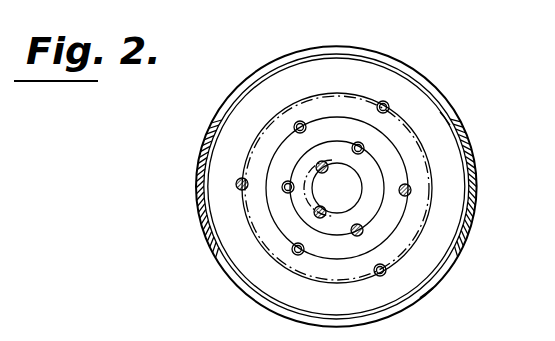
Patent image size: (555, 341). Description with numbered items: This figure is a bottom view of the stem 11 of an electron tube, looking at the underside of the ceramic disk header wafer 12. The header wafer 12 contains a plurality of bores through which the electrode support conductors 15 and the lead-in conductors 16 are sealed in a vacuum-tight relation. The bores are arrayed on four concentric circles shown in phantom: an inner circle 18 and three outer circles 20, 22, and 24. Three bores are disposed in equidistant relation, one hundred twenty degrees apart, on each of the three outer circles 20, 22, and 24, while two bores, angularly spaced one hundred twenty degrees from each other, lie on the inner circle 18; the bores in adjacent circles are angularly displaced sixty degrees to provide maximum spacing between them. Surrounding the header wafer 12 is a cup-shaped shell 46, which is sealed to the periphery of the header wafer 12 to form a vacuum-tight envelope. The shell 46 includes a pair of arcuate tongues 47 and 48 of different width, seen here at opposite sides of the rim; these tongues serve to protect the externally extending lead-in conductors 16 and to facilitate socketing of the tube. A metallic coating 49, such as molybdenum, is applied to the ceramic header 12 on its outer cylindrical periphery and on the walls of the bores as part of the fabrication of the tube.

The stem 11 is at (405, 75).
The ceramic disk header wafer 12 is at (297, 79).
The electrode support conductors 15 is at (382, 101).
The lead-in conductors 16 is at (326, 172).
The inner circle 18 is at (364, 188).
The outer circle 20 is at (377, 164).
The outer circle 22 is at (401, 159).
The outer circle 24 is at (426, 158).
The cup-shaped shell 46 is at (433, 288).
The arcuate tongue 47 is at (472, 198).
The arcuate tongue 48 is at (198, 177).
The metallic coating 49 is at (440, 112).